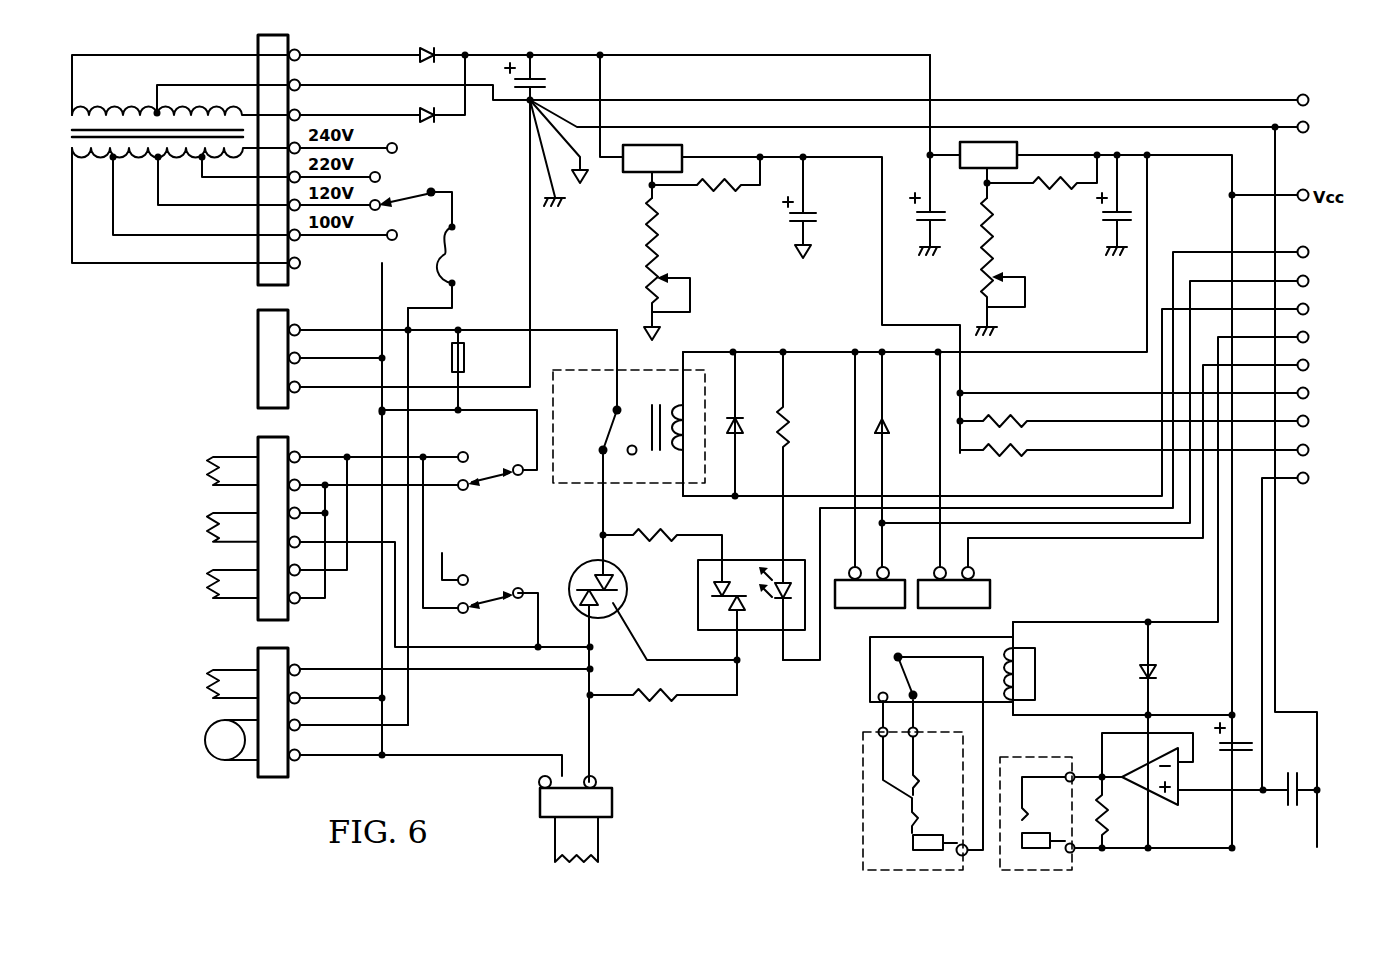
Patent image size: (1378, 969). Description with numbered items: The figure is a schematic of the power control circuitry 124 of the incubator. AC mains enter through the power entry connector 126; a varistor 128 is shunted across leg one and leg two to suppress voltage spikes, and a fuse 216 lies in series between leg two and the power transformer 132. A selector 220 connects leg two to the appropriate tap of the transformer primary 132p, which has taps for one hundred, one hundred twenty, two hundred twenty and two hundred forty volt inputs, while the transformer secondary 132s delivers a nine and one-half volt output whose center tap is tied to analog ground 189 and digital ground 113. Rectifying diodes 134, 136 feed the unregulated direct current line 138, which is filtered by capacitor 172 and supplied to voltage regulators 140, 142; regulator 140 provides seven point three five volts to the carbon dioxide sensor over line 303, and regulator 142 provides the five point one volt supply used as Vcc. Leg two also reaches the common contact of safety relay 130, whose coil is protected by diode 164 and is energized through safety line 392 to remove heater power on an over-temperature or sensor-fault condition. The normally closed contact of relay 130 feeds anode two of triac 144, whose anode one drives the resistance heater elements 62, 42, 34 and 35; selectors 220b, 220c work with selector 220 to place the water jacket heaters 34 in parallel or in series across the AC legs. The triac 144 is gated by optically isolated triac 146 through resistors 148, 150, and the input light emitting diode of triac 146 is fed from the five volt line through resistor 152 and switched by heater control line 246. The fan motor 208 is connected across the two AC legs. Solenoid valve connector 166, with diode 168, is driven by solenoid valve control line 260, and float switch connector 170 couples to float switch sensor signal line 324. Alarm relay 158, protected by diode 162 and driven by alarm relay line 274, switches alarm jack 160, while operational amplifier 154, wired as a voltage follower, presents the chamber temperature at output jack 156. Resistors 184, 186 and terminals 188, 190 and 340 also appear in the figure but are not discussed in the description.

The power transformer 132 is at (278, 34).
The transformer secondary 132s is at (178, 54).
The transformer primary 132p is at (176, 265).
The rectifying diode 134 is at (436, 50).
The rectifying diode 136 is at (436, 121).
The capacitor 172 is at (541, 77).
The unregulated direct current line 138 is at (822, 54).
The voltage regulator 140 is at (688, 144).
The voltage regulator 142 is at (998, 142).
The digital ground 113 is at (568, 208).
The analog ground 189 is at (585, 182).
The selector 220 is at (411, 203).
The fuse 216 is at (457, 243).
The varistor 128 is at (467, 349).
The power entry connector 126 is at (258, 392).
The safety relay 130 is at (604, 369).
The diode 164 is at (742, 420).
The series resistor 152 is at (791, 429).
The diode 168 is at (890, 425).
The resistor 184 is at (995, 415).
The resistor 186 is at (997, 456).
The heater control line 246 is at (1298, 257).
The solenoid valve control signal line 260 is at (1298, 286).
The safety line 392 is at (1298, 314).
The alarm relay line 274 is at (1298, 342).
The float switch sensor signal line 324 is at (1298, 370).
The line 303 is at (1298, 398).
The controller terminal 188 is at (1298, 426).
The controller terminal 190 is at (1298, 455).
The controller terminal 340 is at (1298, 483).
The water jacket heaters 34 is at (212, 528).
The electrical resistance heater element 35 is at (212, 587).
The selector 220b is at (495, 478).
The selector 220c is at (496, 603).
The optically isolated triac 146 is at (755, 560).
The series resistor 148 is at (668, 537).
The triac 144 is at (628, 589).
The resistor 150 is at (657, 705).
The heater element 42 is at (212, 680).
The fan motor 208 is at (206, 752).
The solenoid valve connector 166 is at (856, 611).
The float switch connector 170 is at (993, 598).
The alarm relay 158 is at (1033, 682).
The diode 162 is at (1156, 674).
The alarm jack 160 is at (862, 787).
The output jack 156 is at (1002, 757).
The operational amplifier 154 is at (1163, 800).
The power control circuitry 124 is at (737, 806).
The heater element 62 is at (599, 848).